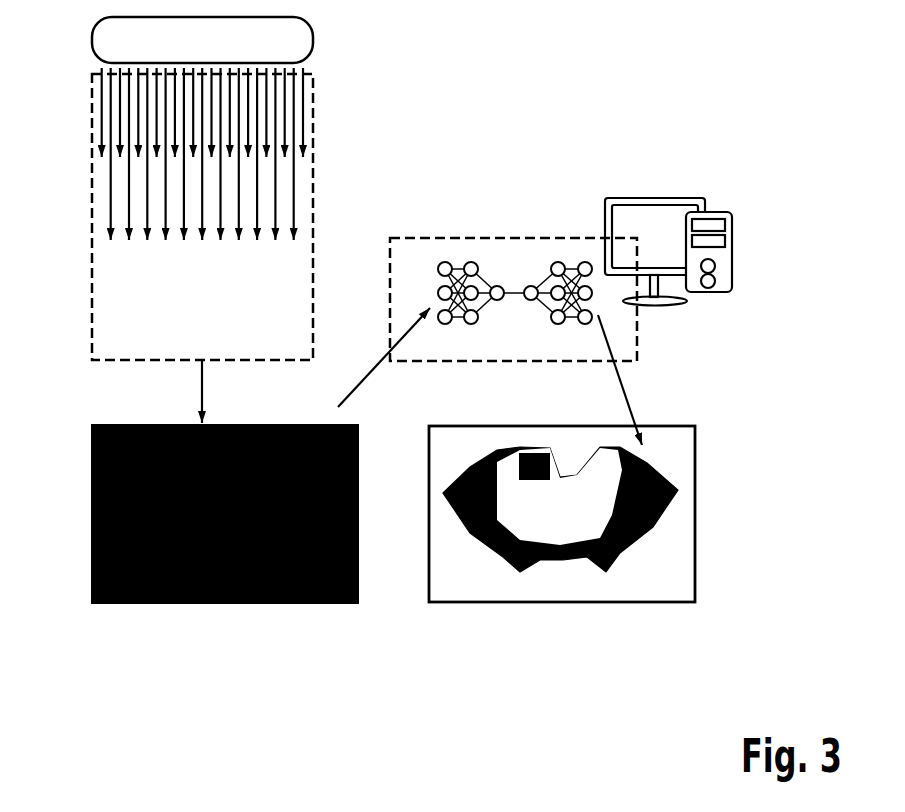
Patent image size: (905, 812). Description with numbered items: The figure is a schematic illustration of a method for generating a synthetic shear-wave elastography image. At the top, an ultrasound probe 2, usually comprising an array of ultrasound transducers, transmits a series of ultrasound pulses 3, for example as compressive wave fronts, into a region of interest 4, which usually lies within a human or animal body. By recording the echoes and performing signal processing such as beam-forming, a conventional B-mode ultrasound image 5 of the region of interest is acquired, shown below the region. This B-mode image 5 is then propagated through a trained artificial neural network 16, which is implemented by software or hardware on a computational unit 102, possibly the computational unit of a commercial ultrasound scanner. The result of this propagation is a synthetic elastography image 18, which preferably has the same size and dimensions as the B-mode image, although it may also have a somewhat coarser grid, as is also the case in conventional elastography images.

The ultrasound probe 2 is at (92, 37).
The ultrasound pulses 3 is at (125, 118).
The region of interest 4 is at (92, 247).
The B-mode ultrasound image 5 is at (92, 515).
The trained artificial neural network 16 is at (485, 238).
The synthetic elastography image (sSWE) 18 is at (695, 512).
The computational unit 102 is at (733, 258).